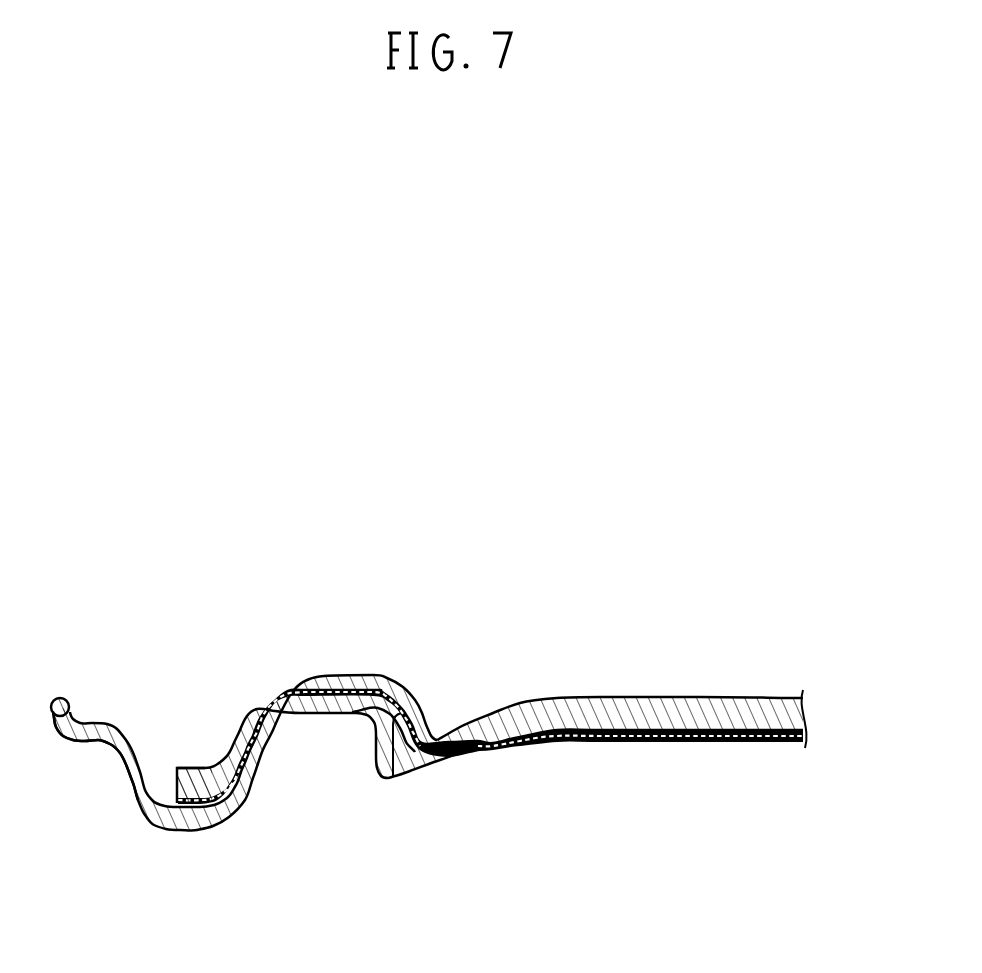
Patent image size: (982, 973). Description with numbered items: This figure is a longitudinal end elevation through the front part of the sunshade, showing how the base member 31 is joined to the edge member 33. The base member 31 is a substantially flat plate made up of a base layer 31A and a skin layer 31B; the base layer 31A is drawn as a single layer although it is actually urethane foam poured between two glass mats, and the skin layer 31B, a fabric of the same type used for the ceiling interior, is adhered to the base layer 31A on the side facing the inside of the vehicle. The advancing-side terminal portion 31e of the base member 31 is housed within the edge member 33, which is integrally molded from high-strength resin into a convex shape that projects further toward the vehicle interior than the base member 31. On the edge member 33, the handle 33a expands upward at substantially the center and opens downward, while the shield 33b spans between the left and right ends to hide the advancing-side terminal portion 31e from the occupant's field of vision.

The base member 31 is at (806, 720).
The base layer 31A is at (617, 698).
The skin layer 31B is at (618, 741).
The advancing-side terminal portion 31e is at (200, 778).
The edge member 33 is at (183, 832).
The handle 33a is at (322, 714).
The shield 33b is at (130, 783).